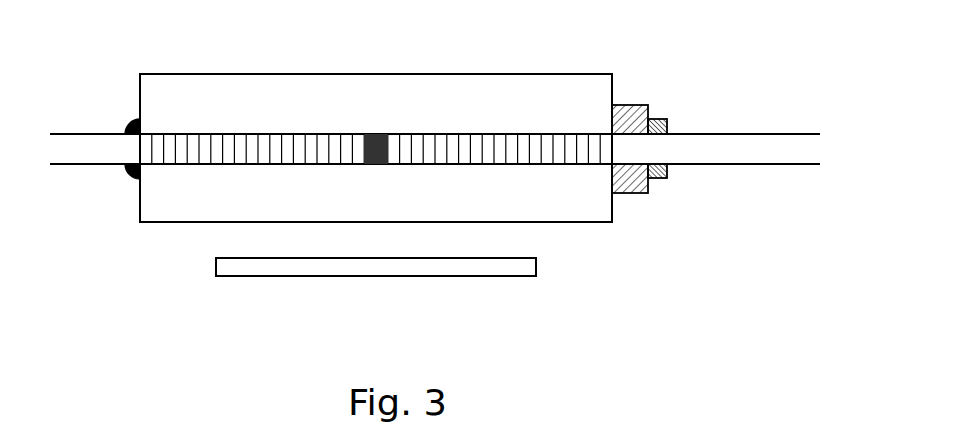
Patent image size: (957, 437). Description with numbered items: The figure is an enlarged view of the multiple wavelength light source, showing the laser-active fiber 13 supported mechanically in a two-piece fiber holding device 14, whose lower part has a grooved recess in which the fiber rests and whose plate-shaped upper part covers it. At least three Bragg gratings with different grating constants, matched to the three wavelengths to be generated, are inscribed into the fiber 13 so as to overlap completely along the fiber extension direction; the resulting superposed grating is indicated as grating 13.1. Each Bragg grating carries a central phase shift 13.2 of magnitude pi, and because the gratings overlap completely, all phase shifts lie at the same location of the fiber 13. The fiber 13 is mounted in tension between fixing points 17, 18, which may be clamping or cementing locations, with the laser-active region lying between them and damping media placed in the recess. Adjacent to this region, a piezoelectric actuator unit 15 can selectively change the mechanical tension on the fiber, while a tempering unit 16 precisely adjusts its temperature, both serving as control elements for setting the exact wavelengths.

The laser-active fiber 13 is at (207, 164).
The grating 13.1 is at (275, 147).
The phase shift 13.2 is at (377, 143).
The fiber holding device 14 is at (173, 83).
The piezoelectric actuator unit 15 is at (633, 193).
The tempering unit 16 is at (258, 268).
The fixing point 17 is at (126, 113).
The fixing point 18 is at (665, 118).